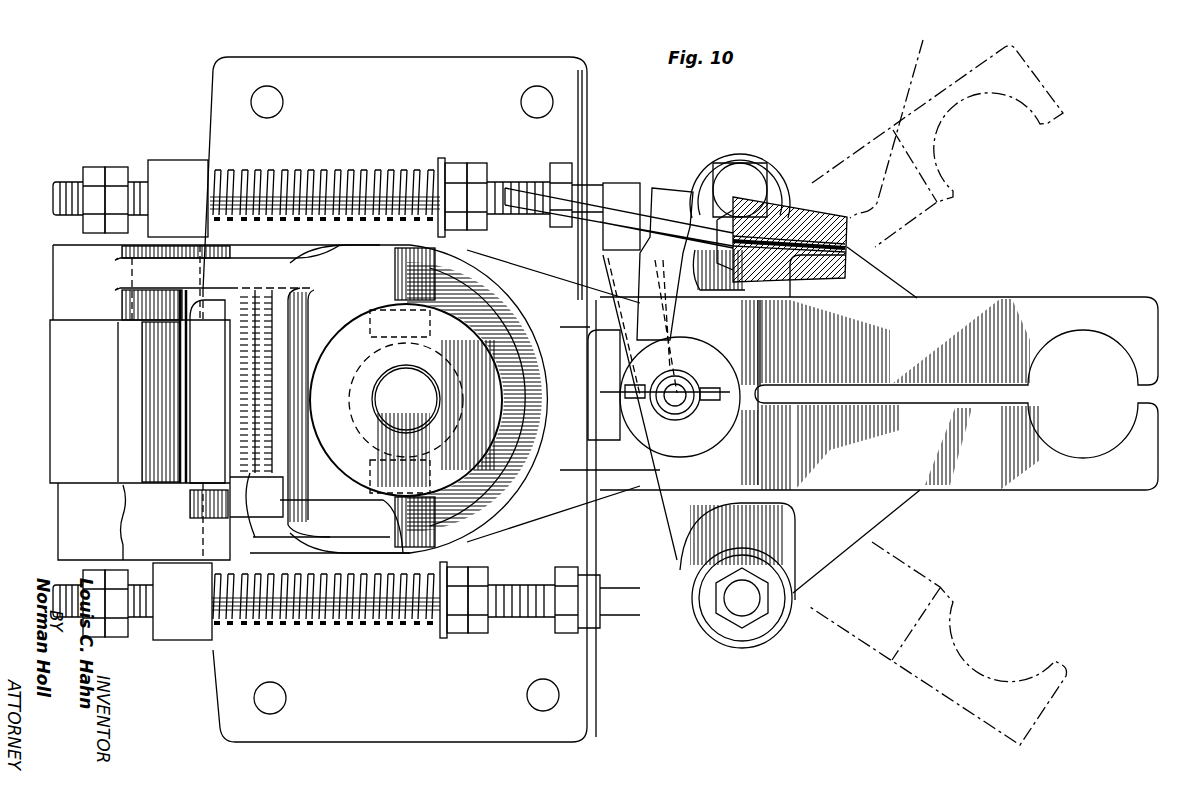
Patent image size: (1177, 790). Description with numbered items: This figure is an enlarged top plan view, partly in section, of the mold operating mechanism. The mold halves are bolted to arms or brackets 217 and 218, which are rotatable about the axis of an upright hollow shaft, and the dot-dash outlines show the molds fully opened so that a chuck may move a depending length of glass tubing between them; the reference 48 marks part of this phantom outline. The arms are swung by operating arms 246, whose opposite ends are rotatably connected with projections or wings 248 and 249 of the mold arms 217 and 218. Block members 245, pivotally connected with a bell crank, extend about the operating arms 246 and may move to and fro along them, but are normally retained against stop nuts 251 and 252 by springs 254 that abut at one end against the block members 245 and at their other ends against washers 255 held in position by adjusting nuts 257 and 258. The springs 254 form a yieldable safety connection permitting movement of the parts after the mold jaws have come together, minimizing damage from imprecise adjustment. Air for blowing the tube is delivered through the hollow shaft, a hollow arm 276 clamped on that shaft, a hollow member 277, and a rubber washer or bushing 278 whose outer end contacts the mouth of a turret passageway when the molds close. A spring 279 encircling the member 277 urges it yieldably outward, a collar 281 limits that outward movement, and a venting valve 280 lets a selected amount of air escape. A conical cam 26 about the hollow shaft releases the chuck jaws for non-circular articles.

The conical cam 26 is at (727, 442).
The handlebar tube phantom line 48 is at (892, 97).
The mold operating arm 217 is at (980, 273).
The mold operating arm 218 is at (967, 487).
The block member 245 is at (182, 163).
The operating arm 246 is at (63, 183).
The wing 248 is at (742, 155).
The wing 249 is at (770, 623).
The stop nut 251 is at (112, 165).
The stop nut 252 is at (90, 167).
The spring 254 is at (343, 153).
The washer 255 is at (440, 160).
The adjusting nut 257 is at (477, 160).
The adjusting nut 258 is at (457, 163).
The hollow arm 276 is at (672, 303).
The hollow member 277 is at (672, 268).
The washer 278 is at (837, 217).
The spring 279 is at (712, 190).
The venting valve 280 is at (541, 422).
The collar 281 is at (627, 193).